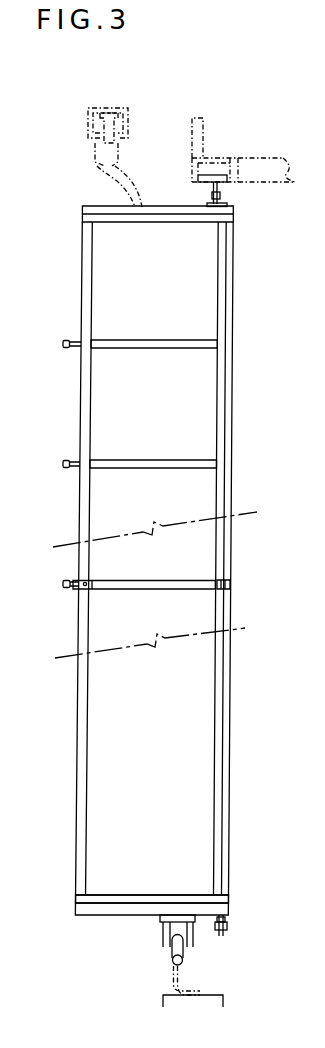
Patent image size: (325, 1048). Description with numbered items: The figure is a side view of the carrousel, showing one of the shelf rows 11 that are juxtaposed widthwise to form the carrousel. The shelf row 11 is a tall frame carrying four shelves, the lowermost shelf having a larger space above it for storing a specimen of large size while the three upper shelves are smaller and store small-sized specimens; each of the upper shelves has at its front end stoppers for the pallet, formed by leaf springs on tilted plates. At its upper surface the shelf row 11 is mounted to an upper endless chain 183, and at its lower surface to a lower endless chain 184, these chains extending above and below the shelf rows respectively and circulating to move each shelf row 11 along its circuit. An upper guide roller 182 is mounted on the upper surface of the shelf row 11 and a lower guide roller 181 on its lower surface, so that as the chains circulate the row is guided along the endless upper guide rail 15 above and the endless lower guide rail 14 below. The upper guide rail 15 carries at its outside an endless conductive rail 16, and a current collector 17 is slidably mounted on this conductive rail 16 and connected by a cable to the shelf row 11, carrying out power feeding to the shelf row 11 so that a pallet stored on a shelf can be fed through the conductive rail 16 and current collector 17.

The shelf row 11 is at (238, 780).
The lower guide rail 14 is at (172, 967).
The upper guide rail 15 is at (222, 158).
The conductive rail 16 is at (129, 113).
The current collector 17 is at (96, 151).
The lower guide roller 181 is at (188, 953).
The upper guide roller 182 is at (226, 181).
The upper endless chain 183 is at (221, 194).
The lower endless chain 184 is at (228, 924).